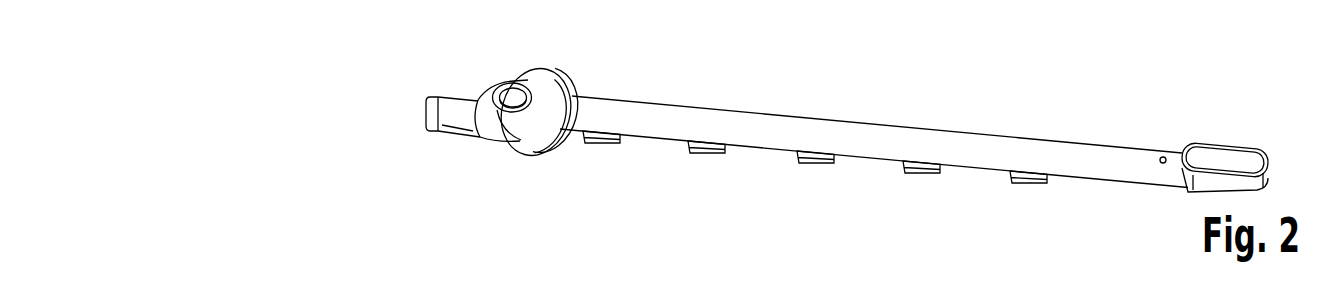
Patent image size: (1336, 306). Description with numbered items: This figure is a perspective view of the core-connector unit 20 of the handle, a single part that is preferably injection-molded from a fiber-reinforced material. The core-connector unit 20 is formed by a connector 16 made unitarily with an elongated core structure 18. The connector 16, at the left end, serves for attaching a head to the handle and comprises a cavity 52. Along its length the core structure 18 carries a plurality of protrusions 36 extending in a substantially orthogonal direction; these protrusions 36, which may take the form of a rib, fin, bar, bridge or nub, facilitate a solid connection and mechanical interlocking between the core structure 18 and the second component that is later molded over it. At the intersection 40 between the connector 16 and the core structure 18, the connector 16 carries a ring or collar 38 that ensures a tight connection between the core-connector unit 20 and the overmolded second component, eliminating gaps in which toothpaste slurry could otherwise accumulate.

The connector 16 is at (412, 121).
The core structure 18 is at (977, 150).
The core-connector unit 20 is at (606, 81).
The protrusions 36 is at (818, 164).
The ring/collar 38 is at (558, 75).
The intersection 40 is at (560, 150).
The cavity 52 is at (514, 106).